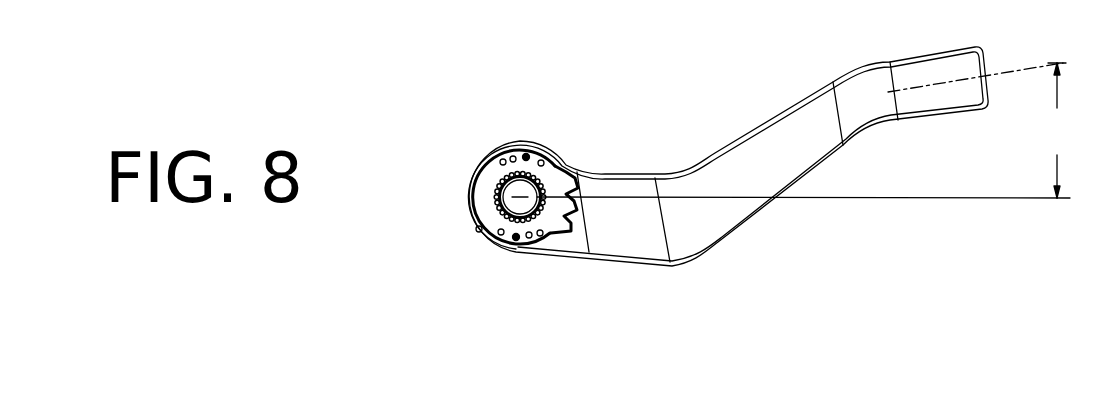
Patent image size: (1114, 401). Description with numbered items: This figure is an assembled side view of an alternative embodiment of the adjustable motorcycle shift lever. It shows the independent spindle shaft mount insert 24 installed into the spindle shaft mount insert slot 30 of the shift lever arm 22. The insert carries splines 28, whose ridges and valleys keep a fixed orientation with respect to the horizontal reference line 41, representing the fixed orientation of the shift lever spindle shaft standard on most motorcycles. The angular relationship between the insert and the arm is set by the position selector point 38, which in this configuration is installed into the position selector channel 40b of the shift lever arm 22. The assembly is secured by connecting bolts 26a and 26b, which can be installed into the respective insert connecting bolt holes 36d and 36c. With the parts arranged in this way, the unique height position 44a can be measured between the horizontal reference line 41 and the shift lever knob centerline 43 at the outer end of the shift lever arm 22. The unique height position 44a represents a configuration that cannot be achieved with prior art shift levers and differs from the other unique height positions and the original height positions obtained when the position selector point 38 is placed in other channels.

The shift lever arm 22 is at (703, 232).
The independent spindle shaft mount insert 24 is at (487, 205).
The connecting bolt 26a is at (451, 116).
The connecting bolt 26b is at (593, 285).
The splines 28 is at (500, 203).
The spindle shaft mount insert slot 30 is at (475, 190).
The insert connecting bolt hole 36c is at (516, 237).
The insert connecting bolt hole 36d is at (526, 157).
The position selector point 38 is at (595, 158).
The position selector channel 40b is at (647, 185).
The horizontal reference line 41 is at (900, 198).
The shift lever knob centerline 43 is at (957, 80).
The unique height position 44a is at (1060, 130).